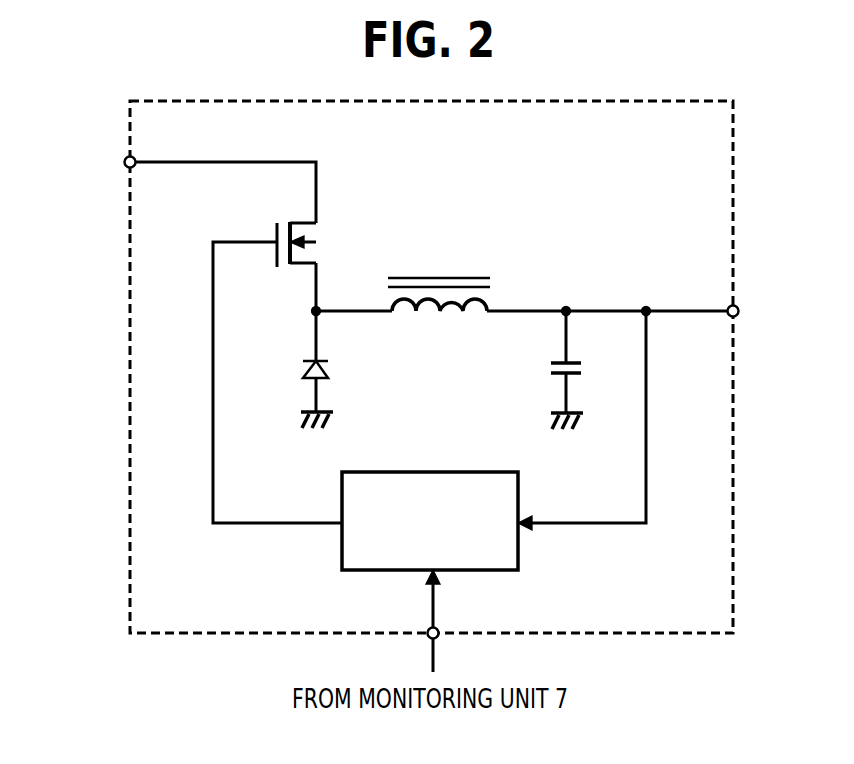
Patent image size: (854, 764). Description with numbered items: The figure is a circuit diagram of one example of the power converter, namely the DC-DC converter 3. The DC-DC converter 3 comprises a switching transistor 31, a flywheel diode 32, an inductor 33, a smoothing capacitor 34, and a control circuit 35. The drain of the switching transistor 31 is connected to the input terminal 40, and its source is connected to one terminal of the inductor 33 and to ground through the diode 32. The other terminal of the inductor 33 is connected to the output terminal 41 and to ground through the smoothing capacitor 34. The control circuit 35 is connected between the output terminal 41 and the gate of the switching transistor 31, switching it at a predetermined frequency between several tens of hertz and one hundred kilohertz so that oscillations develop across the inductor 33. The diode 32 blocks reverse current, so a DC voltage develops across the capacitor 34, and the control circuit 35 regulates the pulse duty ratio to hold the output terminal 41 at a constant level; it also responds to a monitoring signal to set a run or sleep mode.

The DC-DC converter 3 is at (606, 101).
The switching transistor 31 is at (279, 268).
The flywheel diode 32 is at (323, 361).
The inductor 33 is at (441, 278).
The smoothing capacitor 34 is at (573, 364).
The control circuit 35 is at (418, 472).
The input terminal 40 is at (124, 160).
The output terminal 41 is at (739, 309).